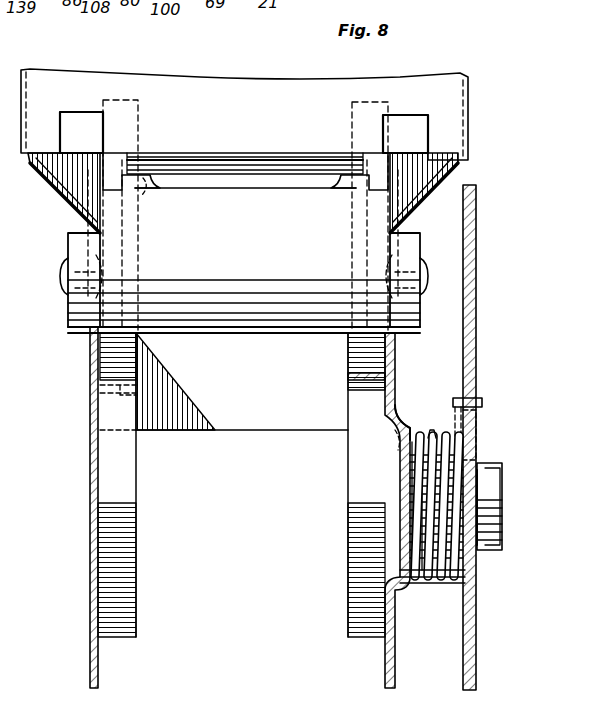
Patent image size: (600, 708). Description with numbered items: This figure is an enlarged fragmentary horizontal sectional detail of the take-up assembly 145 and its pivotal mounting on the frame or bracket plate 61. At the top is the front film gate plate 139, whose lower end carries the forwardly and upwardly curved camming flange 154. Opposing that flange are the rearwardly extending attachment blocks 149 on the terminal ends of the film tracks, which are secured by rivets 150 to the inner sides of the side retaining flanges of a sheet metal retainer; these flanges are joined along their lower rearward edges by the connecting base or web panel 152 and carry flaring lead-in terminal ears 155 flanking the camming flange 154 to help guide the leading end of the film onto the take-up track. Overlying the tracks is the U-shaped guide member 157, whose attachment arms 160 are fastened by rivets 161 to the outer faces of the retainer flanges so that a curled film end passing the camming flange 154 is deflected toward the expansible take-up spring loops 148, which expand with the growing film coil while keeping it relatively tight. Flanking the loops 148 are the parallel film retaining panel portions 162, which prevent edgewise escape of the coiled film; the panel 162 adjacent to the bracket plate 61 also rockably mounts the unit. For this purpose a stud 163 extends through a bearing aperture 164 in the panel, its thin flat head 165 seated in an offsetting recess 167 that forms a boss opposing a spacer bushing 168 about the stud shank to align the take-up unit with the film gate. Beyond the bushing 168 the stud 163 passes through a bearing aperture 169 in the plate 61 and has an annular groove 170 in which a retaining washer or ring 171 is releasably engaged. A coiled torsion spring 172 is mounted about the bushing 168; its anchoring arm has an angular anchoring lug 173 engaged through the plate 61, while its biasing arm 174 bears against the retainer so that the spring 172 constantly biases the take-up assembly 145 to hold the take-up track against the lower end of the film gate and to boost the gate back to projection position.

The film gate plate 139 is at (185, 86).
The attachment blocks 149 is at (140, 128).
The camming flange 154 is at (228, 166).
The rivets 150 is at (150, 182).
The lead-in terminal ears 155 is at (70, 183).
The rivets 161 is at (65, 272).
The guide member 157 is at (268, 318).
The attachment arms 160 is at (80, 308).
The film retaining panel portions 162 is at (92, 655).
The take-up spring loops 148 is at (120, 560).
The base or web panel 152 is at (215, 420).
The take-up assembly 145 is at (83, 583).
The bracket plate 61 is at (462, 679).
The anchoring lug 173 is at (458, 398).
The bearing aperture 164 is at (416, 468).
The flat head 165 is at (420, 490).
The offsetting recess 167 is at (400, 445).
The biasing arm 174 is at (395, 432).
The stud 163 is at (435, 500).
The coiled torsion spring 172 is at (432, 436).
The spacer bushing 168 is at (422, 585).
The annular groove 170 is at (490, 552).
The retaining washer or ring 171 is at (478, 565).
The bearing aperture 169 is at (490, 462).